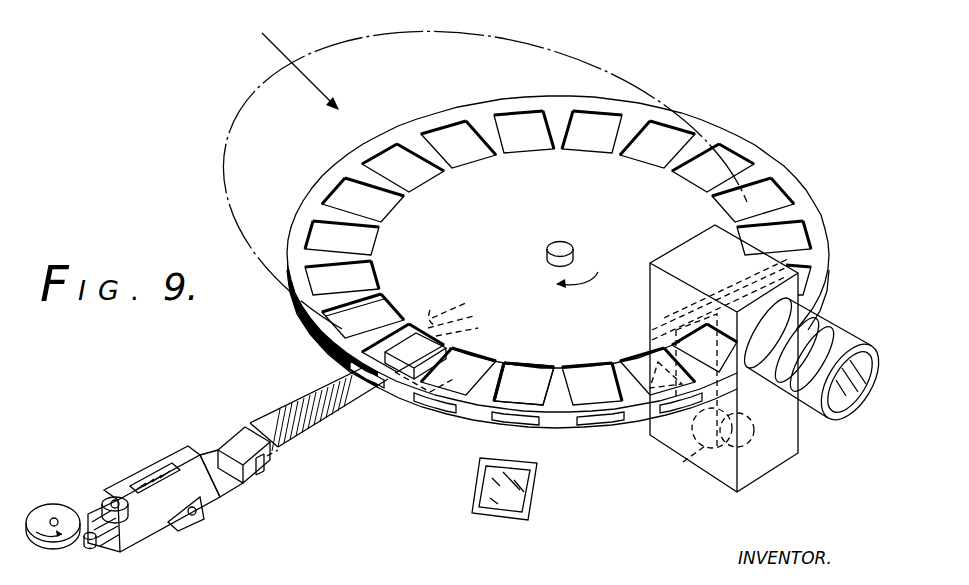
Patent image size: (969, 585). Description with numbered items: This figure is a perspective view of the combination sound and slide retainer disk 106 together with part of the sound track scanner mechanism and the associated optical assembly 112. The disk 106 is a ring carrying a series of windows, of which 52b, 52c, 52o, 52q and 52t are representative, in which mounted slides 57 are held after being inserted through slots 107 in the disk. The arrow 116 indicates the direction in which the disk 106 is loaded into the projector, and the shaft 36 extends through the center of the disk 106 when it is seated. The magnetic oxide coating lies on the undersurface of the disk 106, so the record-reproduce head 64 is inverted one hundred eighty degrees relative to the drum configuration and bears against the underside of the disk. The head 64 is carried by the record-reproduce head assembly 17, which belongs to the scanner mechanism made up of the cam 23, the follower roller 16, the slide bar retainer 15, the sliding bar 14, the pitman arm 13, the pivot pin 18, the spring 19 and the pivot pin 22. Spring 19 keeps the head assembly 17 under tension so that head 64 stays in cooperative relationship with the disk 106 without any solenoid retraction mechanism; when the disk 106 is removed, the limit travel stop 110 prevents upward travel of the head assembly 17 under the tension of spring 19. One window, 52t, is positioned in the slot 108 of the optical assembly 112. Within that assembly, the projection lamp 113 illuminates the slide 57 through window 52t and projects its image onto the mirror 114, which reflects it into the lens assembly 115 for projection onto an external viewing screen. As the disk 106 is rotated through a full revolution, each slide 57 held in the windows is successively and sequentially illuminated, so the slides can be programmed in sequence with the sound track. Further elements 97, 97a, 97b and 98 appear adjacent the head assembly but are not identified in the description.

The sound and slide retainer disk 106 is at (570, 50).
The slot 107 is at (598, 428).
The slot of the optical assembly 108 is at (662, 352).
The limit travel stop 110 is at (245, 427).
The optical assembly 112 is at (713, 476).
The projection lamp 113 is at (686, 464).
The mirror 114 is at (652, 336).
The lens assembly 115 is at (818, 320).
The arrow 116 is at (275, 52).
The shaft 36 is at (576, 243).
The window 52o is at (348, 367).
The window 52q is at (505, 400).
The window 52b is at (808, 268).
The window 52c is at (800, 232).
The window 52t is at (736, 426).
The mounted slide 57 is at (488, 491).
The record-reproduce head 64 is at (406, 319).
The record-reproduce head assembly 17 is at (312, 430).
The slide bar retainer 15 is at (185, 458).
The sliding bar 14 is at (233, 485).
The pivot pin 18 is at (257, 472).
The spring 19 is at (265, 463).
The pitman arm 13 is at (118, 497).
The cam 23 is at (58, 505).
The follower roller 16 is at (88, 550).
The pivot pin 22 is at (190, 522).
The pusher finger 97 is at (466, 308).
The pusher finger 97a is at (438, 305).
The pusher finger 97b is at (482, 323).
The slide pusher 98 is at (456, 350).